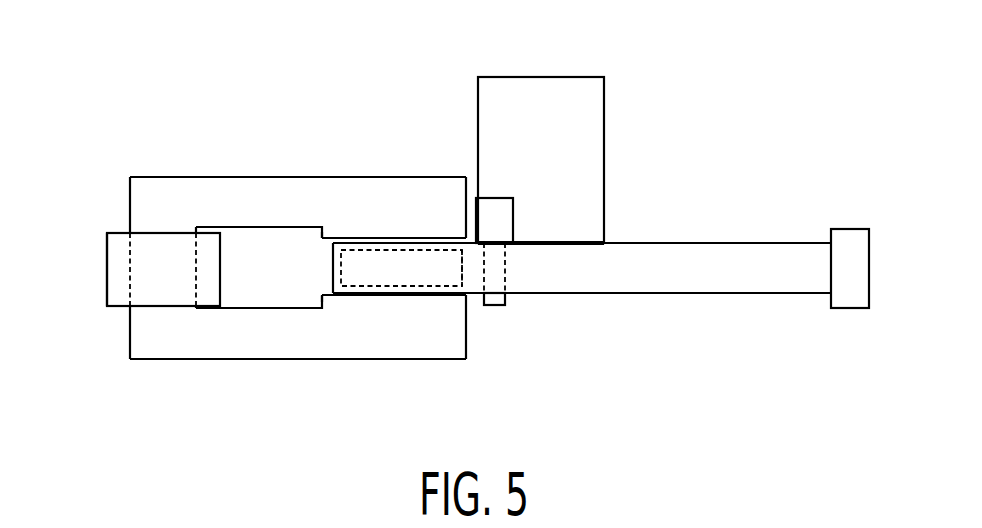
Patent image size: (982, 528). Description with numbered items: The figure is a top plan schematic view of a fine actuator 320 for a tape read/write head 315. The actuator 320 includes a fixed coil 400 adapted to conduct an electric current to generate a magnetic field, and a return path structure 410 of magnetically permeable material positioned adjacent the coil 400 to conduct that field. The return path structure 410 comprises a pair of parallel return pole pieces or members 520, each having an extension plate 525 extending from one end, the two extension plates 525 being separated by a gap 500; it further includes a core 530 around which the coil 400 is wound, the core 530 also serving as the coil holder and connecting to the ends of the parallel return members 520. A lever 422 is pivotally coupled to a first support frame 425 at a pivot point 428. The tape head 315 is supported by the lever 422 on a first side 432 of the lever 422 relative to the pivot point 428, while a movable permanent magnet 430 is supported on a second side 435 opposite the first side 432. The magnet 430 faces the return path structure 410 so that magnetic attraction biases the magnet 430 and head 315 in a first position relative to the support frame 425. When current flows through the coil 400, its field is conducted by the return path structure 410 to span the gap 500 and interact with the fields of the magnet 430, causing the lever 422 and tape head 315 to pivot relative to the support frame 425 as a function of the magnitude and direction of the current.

The tape read/write head 315 is at (851, 229).
The fine actuator 320 is at (126, 138).
The fixed coil 400 is at (117, 260).
The return path structure 410 is at (192, 177).
The lever 422 is at (684, 232).
The first support frame 425 is at (502, 203).
The pivot point 428 is at (493, 307).
The permanent magnet 430 is at (542, 77).
The first side 432 is at (750, 258).
The second side 435 is at (473, 255).
The gap 500 is at (357, 253).
The return pole pieces 520 is at (275, 177).
The extension plate 525 is at (318, 232).
The core 530 is at (130, 288).